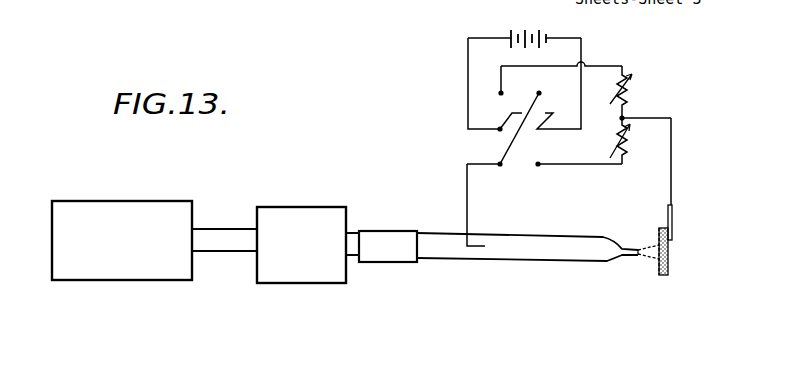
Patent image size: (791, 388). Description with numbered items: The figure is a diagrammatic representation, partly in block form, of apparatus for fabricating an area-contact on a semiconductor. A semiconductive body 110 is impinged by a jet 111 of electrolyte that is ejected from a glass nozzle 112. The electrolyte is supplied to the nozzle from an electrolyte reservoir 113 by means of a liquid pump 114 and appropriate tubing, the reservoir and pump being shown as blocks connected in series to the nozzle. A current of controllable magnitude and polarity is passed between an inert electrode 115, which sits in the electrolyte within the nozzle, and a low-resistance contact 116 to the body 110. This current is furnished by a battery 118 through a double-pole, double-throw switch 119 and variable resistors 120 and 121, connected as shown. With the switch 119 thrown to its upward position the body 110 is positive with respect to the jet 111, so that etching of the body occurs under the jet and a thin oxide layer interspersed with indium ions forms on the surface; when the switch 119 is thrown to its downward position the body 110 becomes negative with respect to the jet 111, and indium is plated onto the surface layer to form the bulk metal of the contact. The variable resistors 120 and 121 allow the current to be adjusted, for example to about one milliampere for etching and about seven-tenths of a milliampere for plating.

The semiconductive body 110 is at (668, 252).
The jet 111 is at (655, 247).
The glass nozzle 112 is at (612, 262).
The electrolyte reservoir 113 is at (150, 202).
The liquid pump 114 is at (310, 208).
The inert electrode 115 is at (472, 258).
The low-resistance contact 116 is at (675, 229).
The battery 118 is at (548, 9).
The double-pole, double-throw switch 119 is at (453, 112).
The variable resistor 120 is at (637, 92).
The variable resistor 121 is at (640, 139).